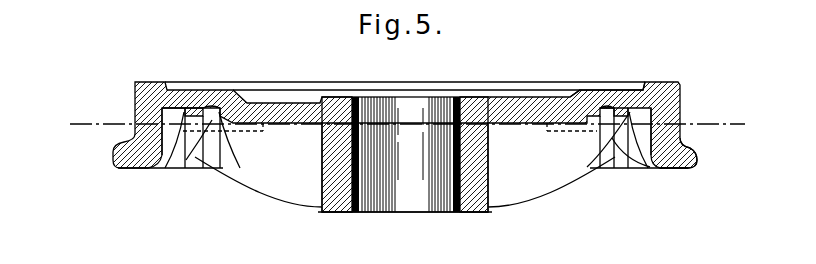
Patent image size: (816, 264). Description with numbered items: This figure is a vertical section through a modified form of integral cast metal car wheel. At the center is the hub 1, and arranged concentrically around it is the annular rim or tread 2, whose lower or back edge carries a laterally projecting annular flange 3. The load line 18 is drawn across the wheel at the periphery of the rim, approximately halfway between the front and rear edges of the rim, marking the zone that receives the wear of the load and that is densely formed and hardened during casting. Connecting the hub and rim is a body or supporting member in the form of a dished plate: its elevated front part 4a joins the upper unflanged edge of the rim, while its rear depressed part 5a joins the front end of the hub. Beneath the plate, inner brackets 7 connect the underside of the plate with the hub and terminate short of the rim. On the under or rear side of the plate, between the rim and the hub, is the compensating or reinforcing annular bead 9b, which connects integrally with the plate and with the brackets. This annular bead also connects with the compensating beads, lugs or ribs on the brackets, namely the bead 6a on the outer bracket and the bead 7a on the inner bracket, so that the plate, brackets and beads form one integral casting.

The load line 18 is at (406, 123).
The annular rim or tread 2 is at (681, 110).
The laterally projecting annular flange 3 is at (694, 165).
The rear depressed part of plate 5a is at (504, 115).
The elevated front part of plate 4a is at (637, 97).
The hub 1 is at (482, 212).
The inner brackets 7 is at (405, 182).
The compensating bead on outer bracket 6a is at (182, 170).
The compensating or reinforcing annular bead 9b is at (212, 120).
The compensating bead on inner bracket 7a is at (600, 165).